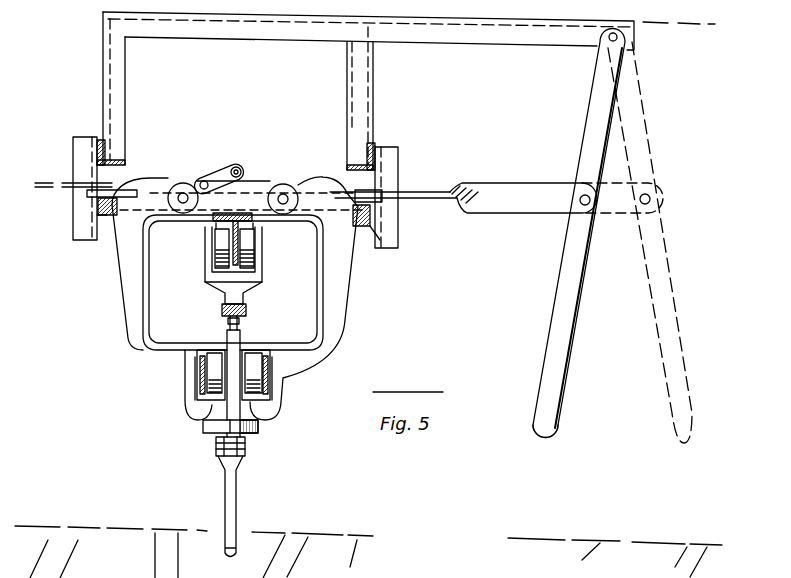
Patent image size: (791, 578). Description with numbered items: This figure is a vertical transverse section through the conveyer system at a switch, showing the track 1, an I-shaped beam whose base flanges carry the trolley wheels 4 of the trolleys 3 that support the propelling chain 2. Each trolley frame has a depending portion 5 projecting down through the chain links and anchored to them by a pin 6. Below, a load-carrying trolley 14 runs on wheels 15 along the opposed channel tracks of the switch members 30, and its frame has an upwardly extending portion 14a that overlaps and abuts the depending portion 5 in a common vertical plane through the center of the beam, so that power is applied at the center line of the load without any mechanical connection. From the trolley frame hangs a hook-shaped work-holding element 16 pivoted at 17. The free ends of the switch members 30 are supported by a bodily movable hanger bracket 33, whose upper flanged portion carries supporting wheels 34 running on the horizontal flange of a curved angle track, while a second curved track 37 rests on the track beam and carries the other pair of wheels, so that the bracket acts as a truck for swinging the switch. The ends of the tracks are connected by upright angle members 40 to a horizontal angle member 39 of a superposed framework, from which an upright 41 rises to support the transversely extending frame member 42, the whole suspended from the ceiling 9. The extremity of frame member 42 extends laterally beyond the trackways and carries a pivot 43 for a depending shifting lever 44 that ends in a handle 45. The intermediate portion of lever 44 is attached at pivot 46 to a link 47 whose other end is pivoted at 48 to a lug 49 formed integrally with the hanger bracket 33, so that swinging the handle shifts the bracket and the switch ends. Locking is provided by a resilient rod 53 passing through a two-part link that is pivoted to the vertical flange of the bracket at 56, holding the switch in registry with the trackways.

The track 1 is at (238, 214).
The propelling chain 2 is at (221, 306).
The trolleys 3 is at (254, 300).
The trolley wheel 4 is at (256, 230).
The depending portion 5 is at (227, 318).
The anchoring pin 6 is at (239, 320).
The ceiling 9 is at (688, 24).
The load-carrying trolley 14 is at (212, 442).
The upwardly extending portion 14a is at (229, 340).
The wheel 15 is at (255, 352).
The work-holding element 16 is at (234, 494).
The pivot 17 is at (246, 442).
The switch member 30 is at (264, 383).
The hanger bracket 33 is at (363, 303).
The supporting wheel 34 is at (288, 185).
The track 37 is at (100, 212).
The horizontally extending angle member 39 is at (112, 158).
The upwardly extending angle member 40 is at (78, 158).
The upright 41 is at (117, 91).
The transversely extending frame member 42 is at (312, 33).
The pivot 43 is at (609, 40).
The shifting lever 44 is at (603, 152).
The handle 45 is at (666, 392).
The pivot 46 is at (634, 237).
The link 47 is at (493, 183).
The pivot 48 is at (375, 210).
The lug 49 is at (372, 208).
The resilient rod 53 is at (241, 165).
The pivot 56 is at (205, 181).